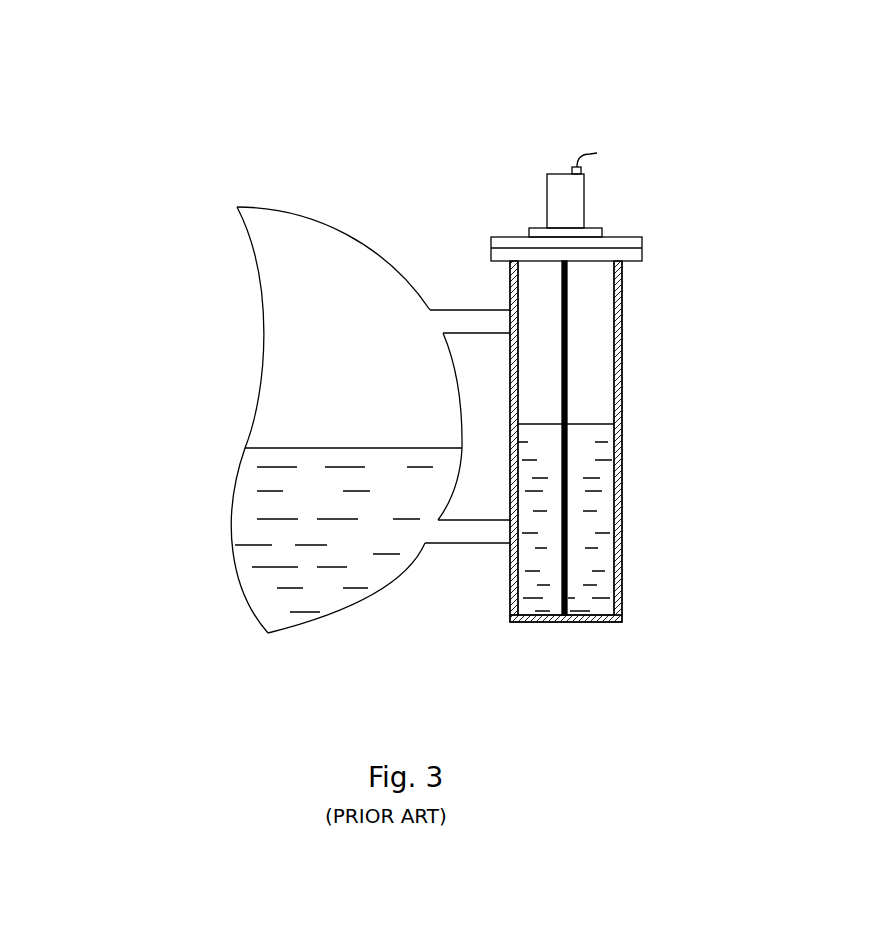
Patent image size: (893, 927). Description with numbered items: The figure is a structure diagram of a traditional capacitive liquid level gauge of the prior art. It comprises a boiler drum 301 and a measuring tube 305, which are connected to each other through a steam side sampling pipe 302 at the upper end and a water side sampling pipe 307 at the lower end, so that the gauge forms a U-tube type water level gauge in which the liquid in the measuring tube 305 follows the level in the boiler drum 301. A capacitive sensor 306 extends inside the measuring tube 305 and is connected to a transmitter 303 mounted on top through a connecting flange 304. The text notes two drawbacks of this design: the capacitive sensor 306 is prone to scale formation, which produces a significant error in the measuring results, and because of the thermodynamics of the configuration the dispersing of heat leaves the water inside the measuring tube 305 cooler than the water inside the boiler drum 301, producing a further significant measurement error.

The boiler drum 301 is at (282, 350).
The steam side sampling pipe 302 is at (468, 308).
The transmitter 303 is at (563, 172).
The connecting flange 304 is at (642, 237).
The measuring tube 305 is at (622, 293).
The capacitive sensor 306 is at (568, 273).
The water side sampling pipe 307 is at (465, 543).